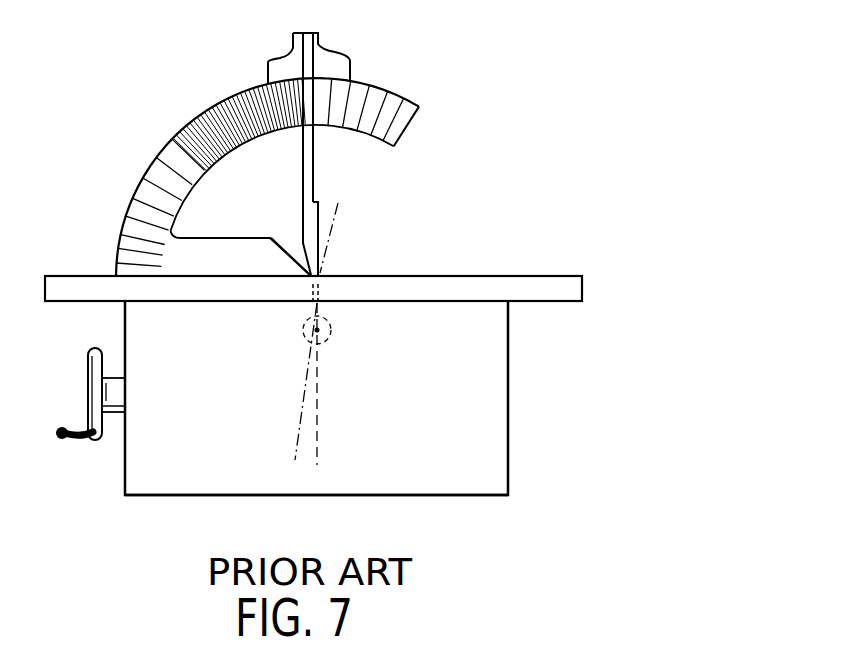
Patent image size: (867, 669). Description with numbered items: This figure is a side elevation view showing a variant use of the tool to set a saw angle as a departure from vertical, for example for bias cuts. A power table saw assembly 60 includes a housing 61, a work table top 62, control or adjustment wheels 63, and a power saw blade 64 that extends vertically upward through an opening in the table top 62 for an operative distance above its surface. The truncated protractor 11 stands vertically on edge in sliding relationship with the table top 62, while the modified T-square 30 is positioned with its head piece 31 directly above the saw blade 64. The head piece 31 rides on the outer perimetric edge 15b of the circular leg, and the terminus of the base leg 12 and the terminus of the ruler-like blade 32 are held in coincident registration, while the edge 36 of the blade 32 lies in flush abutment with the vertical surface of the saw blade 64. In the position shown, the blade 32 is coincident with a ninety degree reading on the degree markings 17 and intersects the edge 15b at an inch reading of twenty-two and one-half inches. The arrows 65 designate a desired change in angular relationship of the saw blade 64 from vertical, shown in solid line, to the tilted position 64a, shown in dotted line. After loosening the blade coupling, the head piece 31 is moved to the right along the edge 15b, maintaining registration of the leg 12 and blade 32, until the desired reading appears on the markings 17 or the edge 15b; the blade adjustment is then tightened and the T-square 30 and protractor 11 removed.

The truncated protractor 11 is at (178, 133).
The base leg 12 is at (222, 270).
The outer perimetric edge 15b is at (228, 102).
The degree markings 17 is at (372, 97).
The modified T-square 30 is at (304, 163).
The head piece 31 is at (328, 58).
The blade 32 is at (314, 210).
The edge of blade 36 is at (314, 168).
The power table saw assembly 60 is at (496, 412).
The housing 61 is at (124, 478).
The work table top 62 is at (521, 275).
The control or adjustment wheels 63 is at (88, 378).
The power saw blade 64 is at (324, 273).
The tilted saw blade position 64a is at (297, 447).
The arrows 65 is at (337, 216).